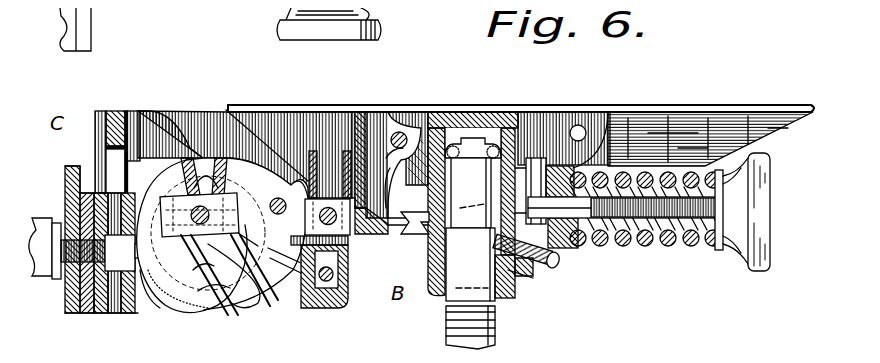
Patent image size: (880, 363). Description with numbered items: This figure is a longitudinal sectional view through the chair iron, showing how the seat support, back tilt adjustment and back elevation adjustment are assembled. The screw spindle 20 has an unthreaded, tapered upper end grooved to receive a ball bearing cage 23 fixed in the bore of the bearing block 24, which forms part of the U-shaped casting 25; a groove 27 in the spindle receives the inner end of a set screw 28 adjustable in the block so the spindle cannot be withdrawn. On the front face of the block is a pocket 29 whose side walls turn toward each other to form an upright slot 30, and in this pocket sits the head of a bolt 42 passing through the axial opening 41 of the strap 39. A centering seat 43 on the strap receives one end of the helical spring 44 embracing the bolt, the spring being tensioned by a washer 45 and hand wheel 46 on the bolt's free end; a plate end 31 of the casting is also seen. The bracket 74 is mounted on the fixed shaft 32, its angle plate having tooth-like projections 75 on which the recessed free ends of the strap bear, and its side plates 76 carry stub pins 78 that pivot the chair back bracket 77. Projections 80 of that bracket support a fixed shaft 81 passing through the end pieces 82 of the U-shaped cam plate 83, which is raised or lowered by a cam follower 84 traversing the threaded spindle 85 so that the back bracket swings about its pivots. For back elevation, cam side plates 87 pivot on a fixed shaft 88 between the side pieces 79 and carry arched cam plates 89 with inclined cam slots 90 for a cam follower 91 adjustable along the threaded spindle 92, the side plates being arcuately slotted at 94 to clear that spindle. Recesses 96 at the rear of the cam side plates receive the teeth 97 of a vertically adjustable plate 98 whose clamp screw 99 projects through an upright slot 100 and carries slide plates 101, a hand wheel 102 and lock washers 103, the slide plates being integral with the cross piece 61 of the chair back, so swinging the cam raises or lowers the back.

The screw spindle 20 is at (438, 308).
The ball bearing cage 23 is at (467, 118).
The bearing block 24 is at (508, 286).
The U-shaped casting 25 is at (590, 120).
The groove 27 is at (462, 240).
The set screw 28 is at (554, 255).
The pocket 29 is at (528, 270).
The upright slot 30 is at (538, 104).
The plate end 31 is at (724, 100).
The fixed shaft 32 is at (392, 122).
The strap 39 is at (400, 230).
The axial opening 41 is at (532, 150).
The bolt 42 is at (640, 234).
The centering seat 43 is at (624, 219).
The helical spring 44 is at (684, 240).
The washer 45 is at (714, 244).
The hand wheel 46 is at (760, 192).
The cross piece 61 is at (60, 180).
The bracket 74 is at (382, 172).
The tooth-like projections 75 is at (376, 226).
The side plates 76 is at (262, 136).
The chair back bracket 77 is at (150, 103).
The stub pins 78 is at (158, 190).
The side pieces 79 is at (268, 196).
The projections 80 is at (332, 300).
The fixed shaft 81 is at (334, 266).
The end pieces 82 is at (336, 234).
The cam plate 83 is at (296, 290).
The cam follower 84 is at (372, 150).
The threaded spindle 85 is at (300, 210).
The side plates of cam 87 is at (200, 300).
The fixed shaft 88 is at (278, 198).
The cam plates 89 is at (182, 150).
The cam slots 90 is at (258, 216).
The cam follower 91 is at (218, 160).
The threaded spindle 92 is at (165, 250).
The arcuate slots 94 is at (236, 296).
The recesses 96 is at (150, 300).
The teeth 97 is at (140, 246).
The vertically adjustable plate 98 is at (118, 190).
The clamp screw 99 is at (82, 306).
The upright slot 100 is at (126, 104).
The slide plates 101 is at (92, 306).
The hand wheel 102 is at (34, 208).
The lock washers 103 is at (46, 272).